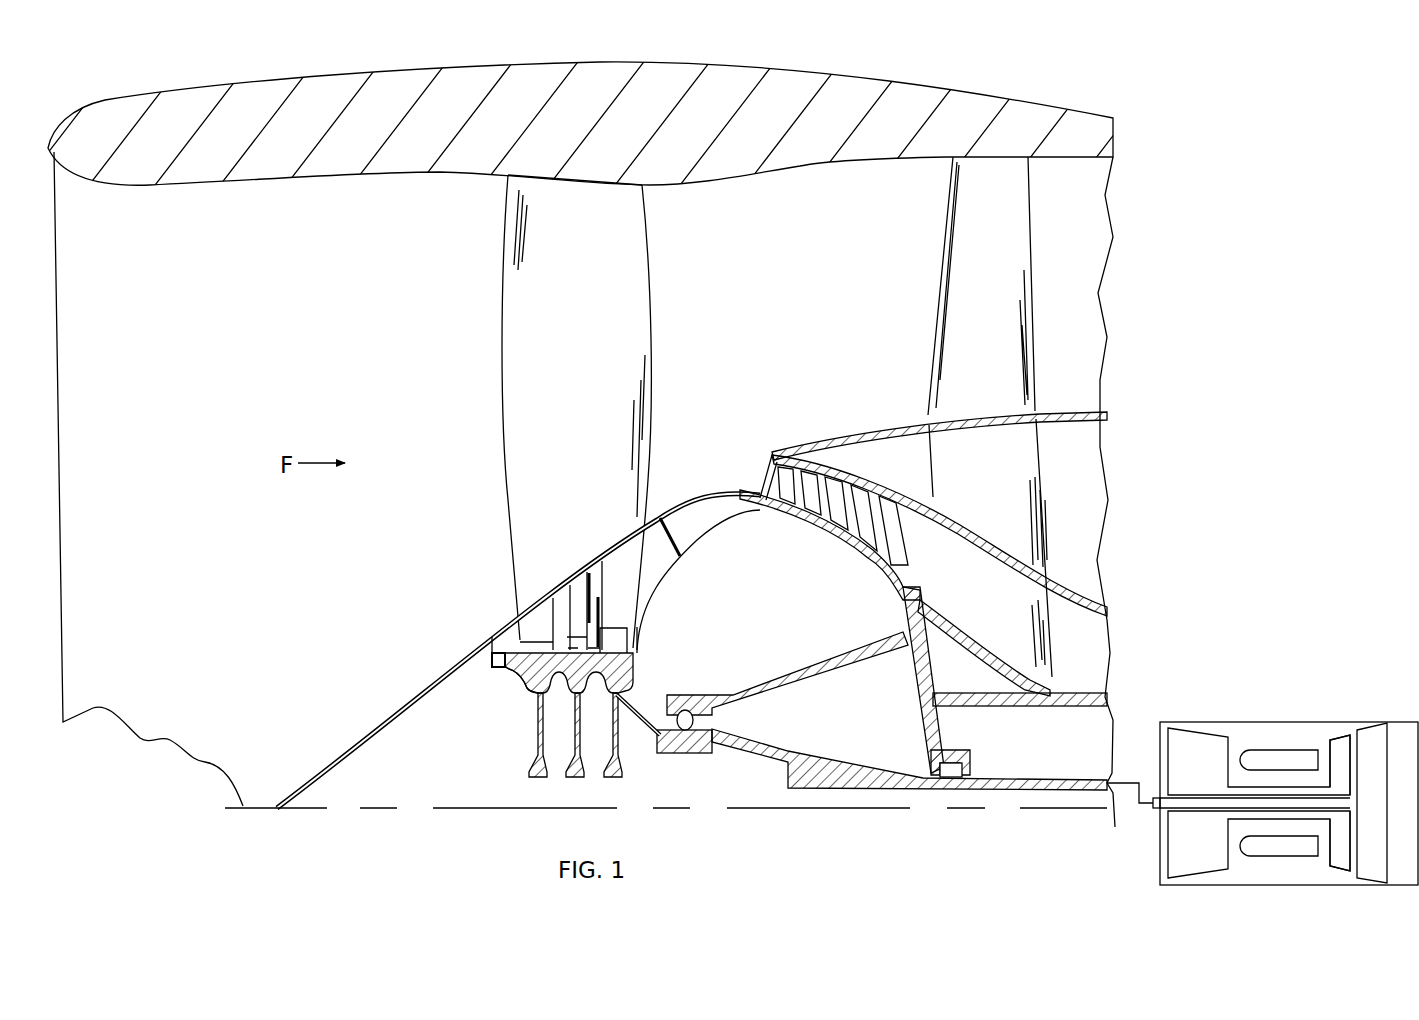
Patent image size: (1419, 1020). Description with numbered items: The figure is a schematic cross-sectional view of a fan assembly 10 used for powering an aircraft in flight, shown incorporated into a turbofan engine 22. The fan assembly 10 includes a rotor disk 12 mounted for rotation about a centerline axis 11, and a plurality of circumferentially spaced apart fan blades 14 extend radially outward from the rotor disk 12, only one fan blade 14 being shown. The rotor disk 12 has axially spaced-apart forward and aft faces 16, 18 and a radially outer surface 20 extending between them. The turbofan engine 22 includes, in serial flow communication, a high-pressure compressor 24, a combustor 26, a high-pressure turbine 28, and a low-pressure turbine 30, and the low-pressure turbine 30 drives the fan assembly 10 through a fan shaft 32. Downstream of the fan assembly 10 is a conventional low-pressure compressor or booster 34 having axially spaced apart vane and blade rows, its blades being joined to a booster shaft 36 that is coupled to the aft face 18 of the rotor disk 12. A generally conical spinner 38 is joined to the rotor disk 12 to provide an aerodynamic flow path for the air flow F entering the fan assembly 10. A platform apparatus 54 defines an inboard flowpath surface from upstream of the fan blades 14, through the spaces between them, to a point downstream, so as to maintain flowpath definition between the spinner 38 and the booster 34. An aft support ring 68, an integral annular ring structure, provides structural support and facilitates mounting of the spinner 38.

The fan assembly 10 is at (418, 360).
The centerline axis 11 is at (392, 810).
The rotor disk 12 is at (537, 777).
The fan blades 14 is at (520, 262).
The forward face 16 is at (520, 690).
The aft face 18 is at (640, 662).
The radially outer surface 20 is at (612, 645).
The turbofan engine 22 is at (1150, 180).
The high-pressure compressor 24 is at (1190, 738).
The combustor 26 is at (1253, 755).
The high-pressure turbine 28 is at (1345, 738).
The low-pressure turbine 30 is at (1377, 733).
The fan shaft 32 is at (880, 770).
The booster 34 is at (772, 470).
The booster shaft 36 is at (900, 568).
The spinner 38 is at (370, 722).
The platform apparatus 54 is at (538, 590).
The aft support ring 68 is at (498, 670).